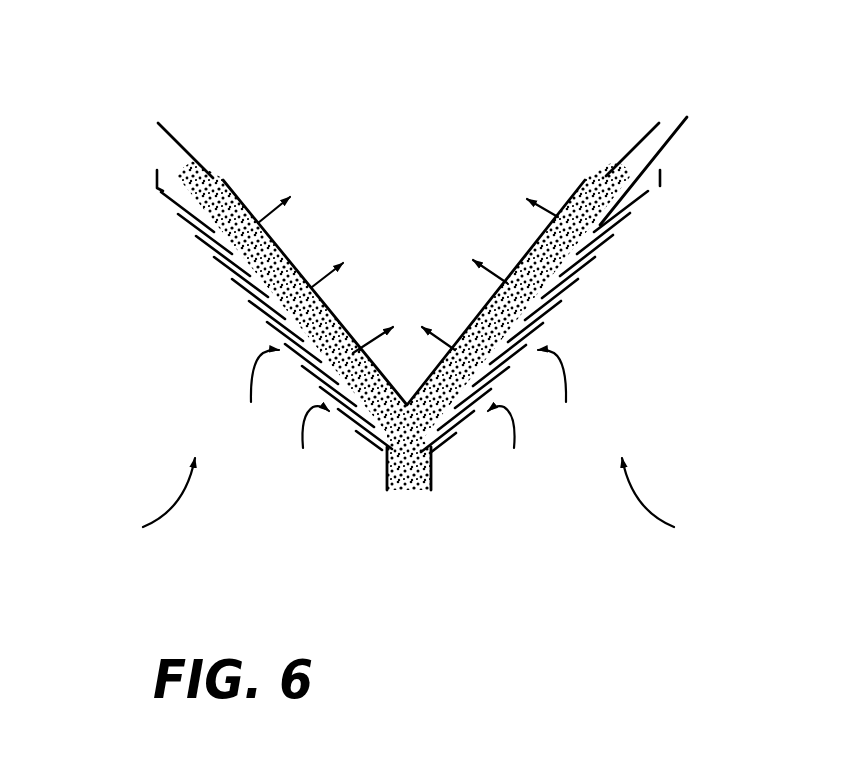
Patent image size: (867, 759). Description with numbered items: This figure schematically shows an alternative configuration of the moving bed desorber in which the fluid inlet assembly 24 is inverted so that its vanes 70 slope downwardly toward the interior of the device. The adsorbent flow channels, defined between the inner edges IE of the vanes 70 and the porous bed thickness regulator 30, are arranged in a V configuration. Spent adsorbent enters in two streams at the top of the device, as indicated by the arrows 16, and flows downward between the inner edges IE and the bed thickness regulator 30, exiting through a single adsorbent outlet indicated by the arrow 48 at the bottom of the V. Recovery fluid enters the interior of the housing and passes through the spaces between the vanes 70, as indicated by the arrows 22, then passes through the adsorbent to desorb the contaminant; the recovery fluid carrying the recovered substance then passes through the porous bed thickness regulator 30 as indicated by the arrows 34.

The adsorbent inlet 16 is at (640, 143).
The recovery fluid flow arrows 22 is at (165, 221).
The fluid inlet assembly 24 is at (660, 198).
The porous bed thickness regulator 30 is at (480, 333).
The recovery fluid exit arrows 34 is at (558, 217).
The adsorbent outlet 48 is at (408, 497).
The vanes 70 is at (163, 181).
The inner edges IE is at (203, 177).